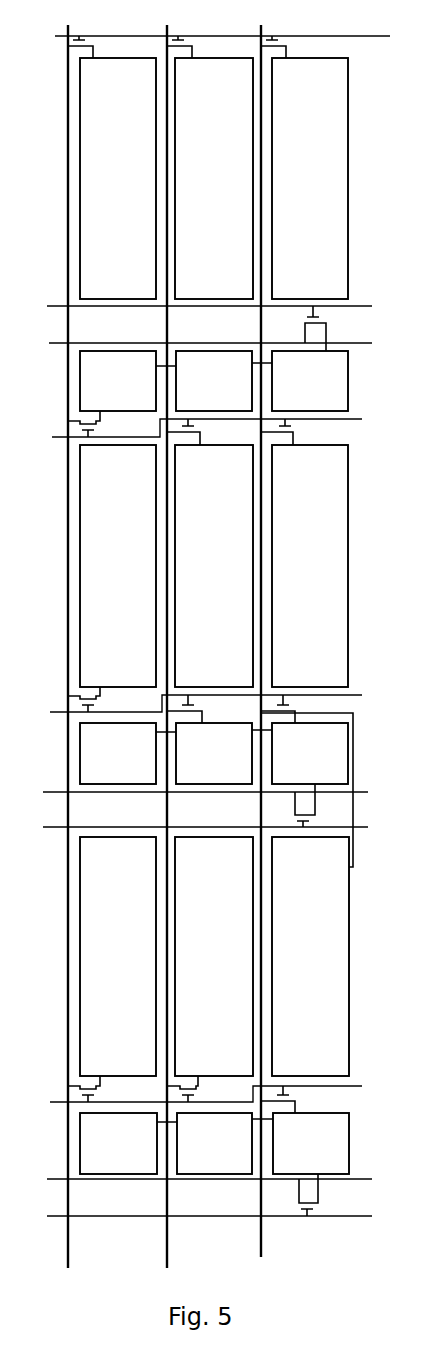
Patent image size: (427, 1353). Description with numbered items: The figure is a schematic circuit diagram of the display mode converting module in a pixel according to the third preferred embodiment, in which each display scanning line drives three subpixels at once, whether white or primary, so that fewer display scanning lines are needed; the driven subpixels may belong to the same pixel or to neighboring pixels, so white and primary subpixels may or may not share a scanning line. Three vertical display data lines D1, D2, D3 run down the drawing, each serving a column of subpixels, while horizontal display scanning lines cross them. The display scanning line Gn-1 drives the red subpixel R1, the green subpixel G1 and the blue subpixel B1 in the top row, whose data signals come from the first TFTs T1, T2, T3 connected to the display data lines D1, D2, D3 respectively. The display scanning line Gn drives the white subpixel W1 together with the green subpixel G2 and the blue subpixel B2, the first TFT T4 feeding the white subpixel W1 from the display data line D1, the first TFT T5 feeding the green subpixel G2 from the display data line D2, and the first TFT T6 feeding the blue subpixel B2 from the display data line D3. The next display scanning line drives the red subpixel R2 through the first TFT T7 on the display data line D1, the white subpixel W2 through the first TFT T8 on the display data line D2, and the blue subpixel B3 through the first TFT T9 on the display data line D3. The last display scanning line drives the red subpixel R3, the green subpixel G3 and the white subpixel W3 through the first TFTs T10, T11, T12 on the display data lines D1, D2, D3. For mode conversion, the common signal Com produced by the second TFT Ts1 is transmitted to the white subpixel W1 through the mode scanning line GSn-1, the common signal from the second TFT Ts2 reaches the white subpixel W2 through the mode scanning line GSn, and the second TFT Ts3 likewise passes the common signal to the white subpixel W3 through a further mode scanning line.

The display data line D1 is at (68, 640).
The display data line D2 is at (167, 640).
The display data line D3 is at (261, 634).
The display scanning line Gn-1 is at (205, 36).
The display scanning line Gn is at (198, 431).
The mode scanning line GSn-1 is at (192, 306).
The mode scanning line GSn is at (190, 792).
The common signal Com is at (193, 761).
The red subpixel R1 is at (118, 178).
The green subpixel G1 is at (214, 178).
The blue subpixel B1 is at (310, 178).
The red subpixel R2 is at (118, 566).
The green subpixel G2 is at (214, 566).
The blue subpixel B2 is at (310, 566).
The red subpixel R3 is at (118, 956).
The green subpixel G3 is at (214, 956).
The blue subpixel B3 is at (307, 894).
The white subpixel W1 is at (214, 381).
The white subpixel W2 is at (214, 753).
The white subpixel W3 is at (214, 1143).
The first TFT T1 is at (86, 47).
The first TFT T2 is at (184, 47).
The first TFT T3 is at (278, 47).
The first TFT T4 is at (91, 424).
The first TFT T5 is at (188, 432).
The first TFT T6 is at (284, 432).
The first TFT T7 is at (91, 699).
The first TFT T8 is at (188, 709).
The first TFT T9 is at (282, 709).
The first TFT T10 is at (95, 1089).
The first TFT T11 is at (191, 1089).
The first TFT T12 is at (286, 1099).
The second TFT Ts1 is at (326, 328).
The second TFT Ts2 is at (315, 805).
The second TFT Ts3 is at (317, 1195).